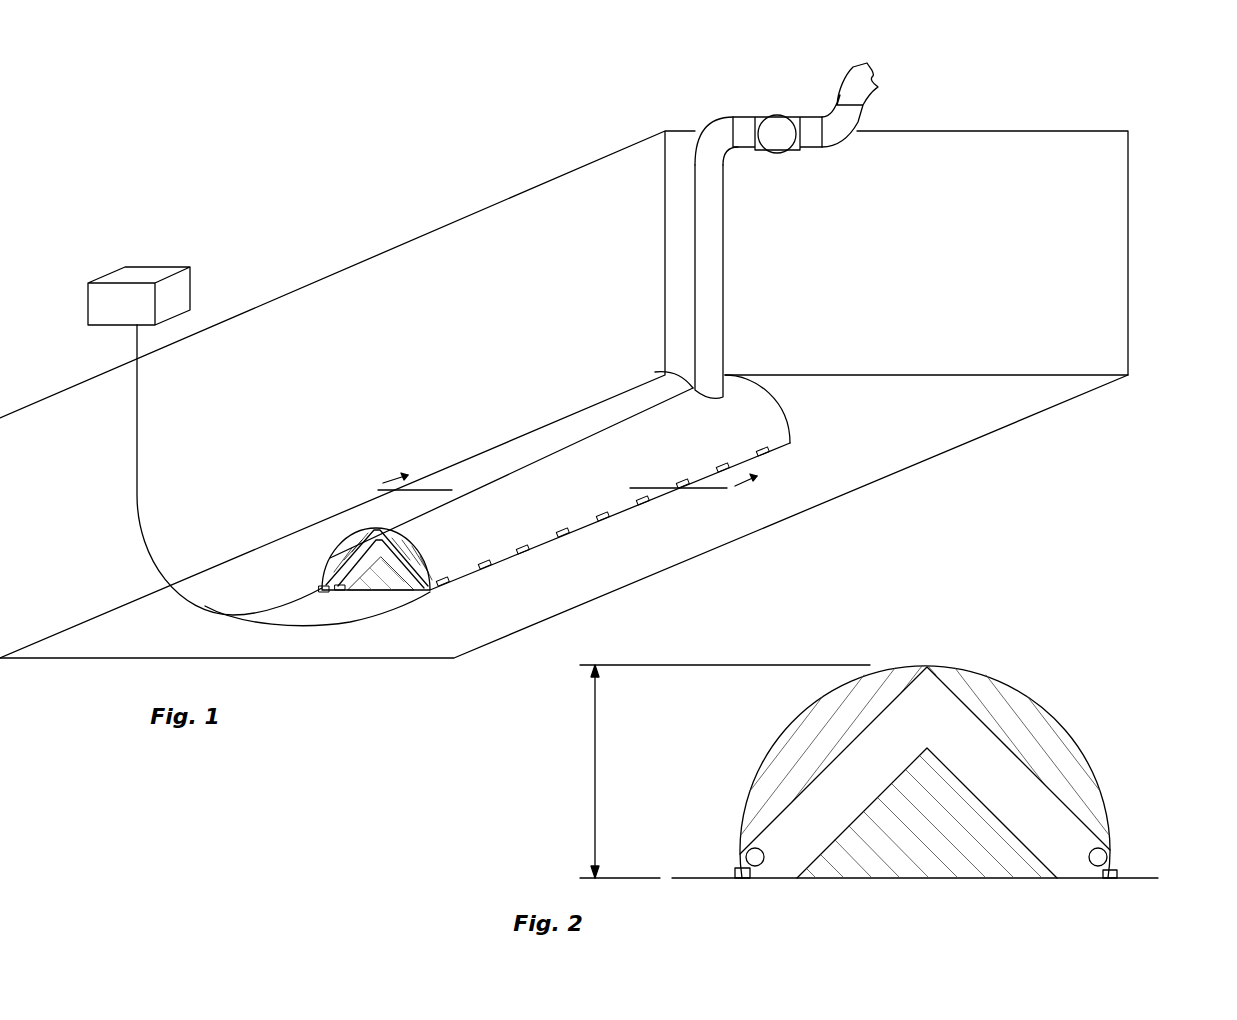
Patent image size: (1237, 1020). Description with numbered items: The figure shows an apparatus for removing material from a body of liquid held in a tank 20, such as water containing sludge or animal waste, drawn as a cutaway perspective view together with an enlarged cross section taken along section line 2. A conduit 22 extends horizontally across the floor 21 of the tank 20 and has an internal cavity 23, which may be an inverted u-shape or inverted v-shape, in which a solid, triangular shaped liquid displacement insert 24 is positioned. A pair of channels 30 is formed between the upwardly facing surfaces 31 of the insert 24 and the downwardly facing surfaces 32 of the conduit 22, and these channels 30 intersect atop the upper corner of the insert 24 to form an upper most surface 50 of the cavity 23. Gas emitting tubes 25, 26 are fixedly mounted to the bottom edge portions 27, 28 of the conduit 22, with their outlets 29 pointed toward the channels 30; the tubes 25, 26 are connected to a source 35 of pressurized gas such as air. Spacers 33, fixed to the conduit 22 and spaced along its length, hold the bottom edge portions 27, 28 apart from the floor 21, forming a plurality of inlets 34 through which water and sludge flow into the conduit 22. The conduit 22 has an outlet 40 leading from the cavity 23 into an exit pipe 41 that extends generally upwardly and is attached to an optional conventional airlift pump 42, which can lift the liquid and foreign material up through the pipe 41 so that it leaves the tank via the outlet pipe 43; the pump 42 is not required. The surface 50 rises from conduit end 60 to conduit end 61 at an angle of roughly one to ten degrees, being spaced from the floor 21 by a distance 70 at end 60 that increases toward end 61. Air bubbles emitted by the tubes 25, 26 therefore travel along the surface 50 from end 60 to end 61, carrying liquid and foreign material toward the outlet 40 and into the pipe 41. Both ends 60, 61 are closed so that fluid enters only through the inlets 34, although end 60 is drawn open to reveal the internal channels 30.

In FIG. 1, the section line 2 is at (575, 471).
In FIG. 1, the tank 20 is at (345, 292).
In FIG. 1, the floor 21 is at (880, 450).
In FIG. 2, the floor 21 is at (1143, 872).
In FIG. 1, the conduit 22 is at (766, 418).
In FIG. 2, the conduit 22 is at (1075, 768).
In FIG. 1, the internal cavity 23 is at (366, 537).
In FIG. 1, the liquid displacement insert 24 is at (352, 547).
In FIG. 2, the liquid displacement insert 24 is at (993, 860).
In FIG. 1, the gas emitting tube 25 is at (346, 540).
In FIG. 2, the gas emitting tube 25 is at (743, 860).
In FIG. 1, the gas emitting tube 26 is at (430, 580).
In FIG. 2, the gas emitting tube 26 is at (1090, 866).
In FIG. 2, the bottom edge portion 27 is at (748, 858).
In FIG. 2, the bottom edge portion 28 is at (1112, 865).
In FIG. 1, the outlet 29 is at (325, 572).
In FIG. 2, the outlet 29 is at (760, 850).
In FIG. 2, the channel 30 is at (942, 720).
In FIG. 2, the upwardly facing surface 31 is at (982, 808).
In FIG. 2, the downwardly facing surface 32 is at (838, 756).
In FIG. 1, the spacer 33 is at (648, 507).
In FIG. 2, the spacer 33 is at (742, 880).
In FIG. 1, the inlet 34 is at (545, 552).
In FIG. 1, the source of pressurized gas 35 is at (122, 305).
In FIG. 1, the outlet 40 is at (655, 373).
In FIG. 1, the exit pipe 41 is at (705, 320).
In FIG. 1, the airlift pump 42 is at (770, 143).
In FIG. 1, the outlet pipe 43 is at (810, 125).
In FIG. 2, the upper most surface 50 is at (926, 652).
In FIG. 1, the conduit end 60 is at (384, 541).
In FIG. 2, the conduit end 60 is at (1040, 698).
In FIG. 1, the conduit end 61 is at (760, 397).
In FIG. 2, the distance 70 is at (594, 818).